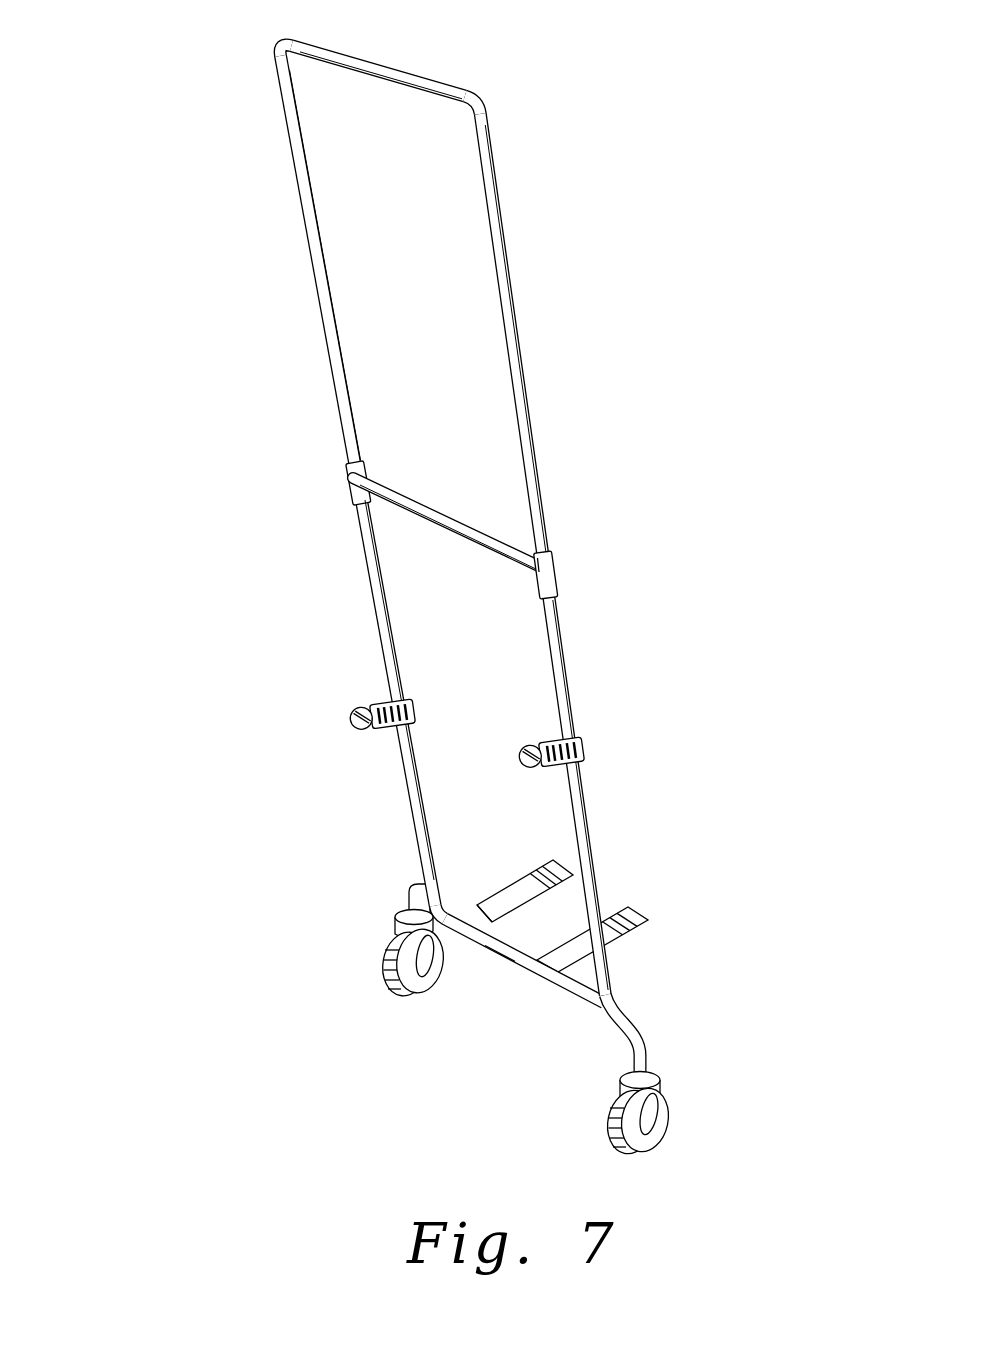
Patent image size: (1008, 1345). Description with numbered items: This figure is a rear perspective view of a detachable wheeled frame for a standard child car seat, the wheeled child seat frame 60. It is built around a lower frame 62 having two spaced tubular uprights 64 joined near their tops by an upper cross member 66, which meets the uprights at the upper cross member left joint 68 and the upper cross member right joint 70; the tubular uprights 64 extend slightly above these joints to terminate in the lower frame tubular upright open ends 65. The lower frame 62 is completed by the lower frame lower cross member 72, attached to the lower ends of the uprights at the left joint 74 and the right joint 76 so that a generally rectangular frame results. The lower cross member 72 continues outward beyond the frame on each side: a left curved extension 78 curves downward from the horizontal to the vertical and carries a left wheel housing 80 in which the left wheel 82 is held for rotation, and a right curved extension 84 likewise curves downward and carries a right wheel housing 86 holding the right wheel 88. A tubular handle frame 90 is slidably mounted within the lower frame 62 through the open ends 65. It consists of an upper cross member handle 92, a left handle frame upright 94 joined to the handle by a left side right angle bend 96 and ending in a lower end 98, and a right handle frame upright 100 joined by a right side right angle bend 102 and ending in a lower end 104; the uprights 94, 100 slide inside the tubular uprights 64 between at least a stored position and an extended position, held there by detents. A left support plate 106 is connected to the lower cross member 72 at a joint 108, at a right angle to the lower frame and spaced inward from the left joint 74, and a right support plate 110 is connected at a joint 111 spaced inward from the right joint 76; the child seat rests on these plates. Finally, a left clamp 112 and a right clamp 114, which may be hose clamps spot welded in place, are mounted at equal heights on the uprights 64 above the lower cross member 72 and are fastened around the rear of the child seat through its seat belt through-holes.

The wheeled child seat frame 60 is at (477, 766).
The lower frame 62 is at (596, 710).
The tubular uprights 64 is at (391, 655).
The lower frame tubular upright open ends 65 is at (364, 462).
The upper cross member 66 is at (414, 492).
The upper cross member left joint 68 is at (348, 481).
The upper cross member right joint 70 is at (540, 580).
The lower frame lower cross member 72 is at (553, 991).
The left joint 74 is at (418, 887).
The right joint 76 is at (628, 1016).
The left curved extension 78 is at (405, 897).
The left wheel housing 80 is at (394, 913).
The left wheel 82 is at (384, 968).
The right curved extension 84 is at (620, 1093).
The right wheel housing 86 is at (659, 1081).
The right wheel 88 is at (668, 1140).
The tubular handle frame 90 is at (415, 290).
The upper cross member handle 92 is at (361, 54).
The left handle frame upright 94 is at (302, 217).
The left side right angle bend 96 is at (273, 36).
The lower end 98 is at (303, 547).
The right handle frame upright 100 is at (503, 212).
The right side right angle bend 102 is at (486, 102).
The lower end 104 is at (548, 637).
The left support plate 106 is at (524, 888).
The joint 108 is at (470, 909).
The right support plate 110 is at (632, 912).
The joint 111 is at (501, 993).
The left clamp 112 is at (380, 700).
The right clamp 114 is at (522, 744).